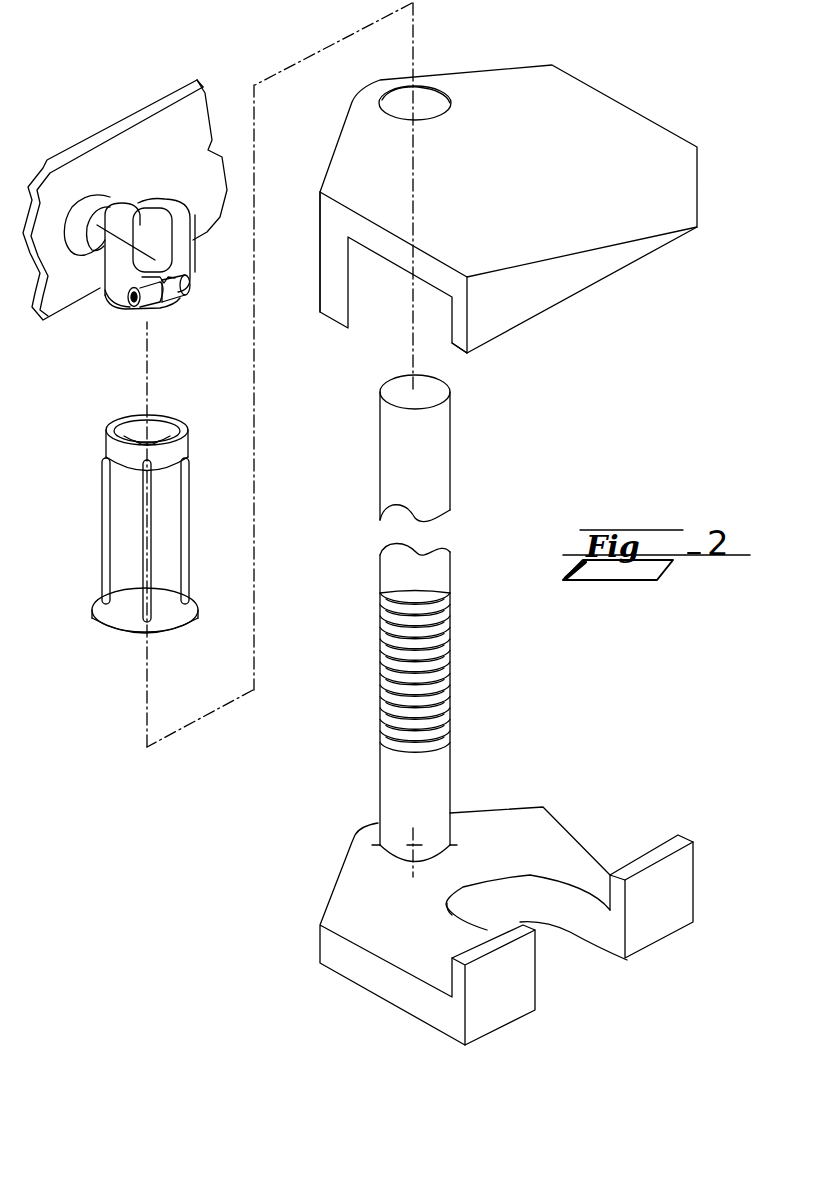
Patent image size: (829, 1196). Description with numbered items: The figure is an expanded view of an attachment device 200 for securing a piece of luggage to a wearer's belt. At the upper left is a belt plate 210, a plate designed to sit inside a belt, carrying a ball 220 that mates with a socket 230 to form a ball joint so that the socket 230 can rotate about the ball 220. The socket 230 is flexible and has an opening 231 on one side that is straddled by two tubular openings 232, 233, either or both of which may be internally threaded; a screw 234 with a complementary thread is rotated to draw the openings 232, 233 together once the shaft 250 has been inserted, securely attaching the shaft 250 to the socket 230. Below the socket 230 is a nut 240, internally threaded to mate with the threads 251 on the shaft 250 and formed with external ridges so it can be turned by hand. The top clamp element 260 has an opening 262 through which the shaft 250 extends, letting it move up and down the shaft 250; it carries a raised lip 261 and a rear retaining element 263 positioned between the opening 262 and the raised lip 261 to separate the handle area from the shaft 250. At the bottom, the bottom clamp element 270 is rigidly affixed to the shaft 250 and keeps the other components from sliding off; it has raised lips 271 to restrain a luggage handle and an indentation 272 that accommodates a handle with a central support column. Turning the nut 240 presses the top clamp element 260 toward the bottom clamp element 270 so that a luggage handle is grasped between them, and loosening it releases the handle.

The attachment device 200 is at (712, 92).
The belt plate 210 is at (208, 100).
The ball 220 is at (140, 212).
The socket 230 is at (118, 307).
The opening 231 is at (155, 307).
The tubular opening 232 is at (140, 303).
The tubular opening 233 is at (178, 290).
The screw 234 is at (188, 282).
The nut 240 is at (190, 525).
The shaft 250 is at (380, 567).
The threads 251 is at (372, 740).
The top clamp element 260 is at (515, 65).
The raised lip 261 is at (453, 347).
The opening 262 is at (425, 100).
The rear retaining element 263 is at (320, 268).
The bottom clamp element 270 is at (327, 905).
The raised lips 271 is at (607, 893).
The indentation 272 is at (468, 878).